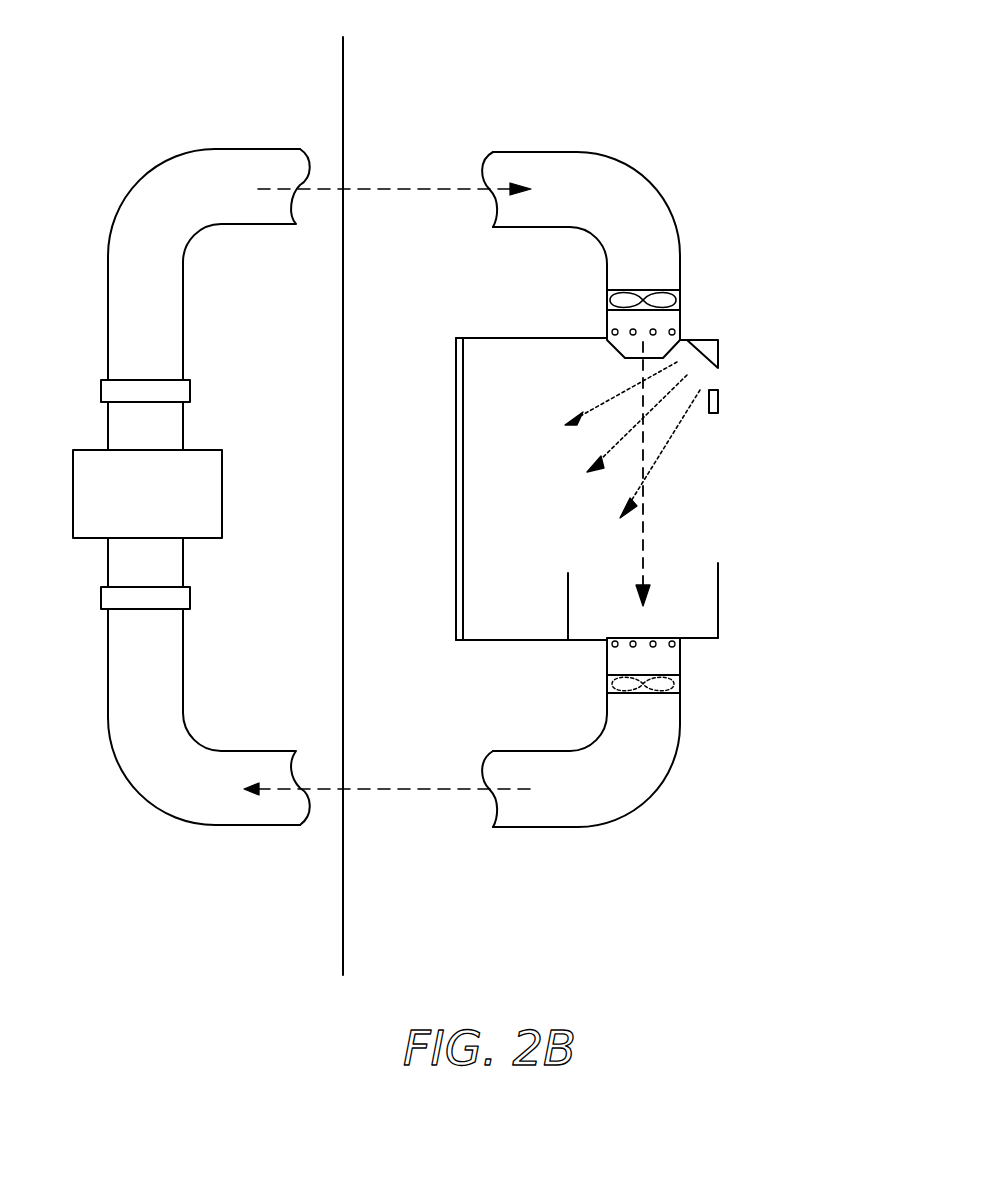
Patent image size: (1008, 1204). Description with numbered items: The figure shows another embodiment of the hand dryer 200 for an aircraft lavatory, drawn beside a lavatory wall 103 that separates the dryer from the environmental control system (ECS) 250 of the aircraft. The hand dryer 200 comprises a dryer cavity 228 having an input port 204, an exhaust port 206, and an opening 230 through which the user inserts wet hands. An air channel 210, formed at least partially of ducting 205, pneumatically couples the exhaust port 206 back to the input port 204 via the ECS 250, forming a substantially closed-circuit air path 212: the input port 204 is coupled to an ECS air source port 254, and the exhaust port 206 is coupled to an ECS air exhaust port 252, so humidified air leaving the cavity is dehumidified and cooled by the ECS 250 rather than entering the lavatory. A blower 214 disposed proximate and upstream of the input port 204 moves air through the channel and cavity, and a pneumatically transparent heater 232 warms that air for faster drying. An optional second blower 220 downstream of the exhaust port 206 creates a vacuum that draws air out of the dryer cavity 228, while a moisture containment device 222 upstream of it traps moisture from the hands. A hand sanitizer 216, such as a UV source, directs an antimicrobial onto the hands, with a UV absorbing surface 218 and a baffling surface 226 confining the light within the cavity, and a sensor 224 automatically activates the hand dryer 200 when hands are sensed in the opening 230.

The hand dryer 200 is at (499, 28).
The lavatory wall 103 is at (344, 127).
The closed-circuit air path 212 is at (370, 188).
The air channel 210 is at (145, 345).
The ducting 205 is at (607, 168).
The ECS air source port 254 is at (173, 393).
The environmental control system 250 is at (200, 449).
The ECS air exhaust port 252 is at (177, 602).
The blower 214 is at (670, 290).
The pneumatically transparent heater 232 is at (662, 322).
The hand sanitizer 216 is at (708, 340).
The sensor 224 is at (718, 398).
The input port 204 is at (633, 345).
The UV absorbing surface 218 is at (460, 338).
The dryer cavity 228 is at (532, 508).
The baffling surface 226 is at (568, 607).
The opening 230 is at (727, 487).
The exhaust port 206 is at (652, 628).
The moisture containment device 222 is at (653, 644).
The second blower 220 is at (665, 697).